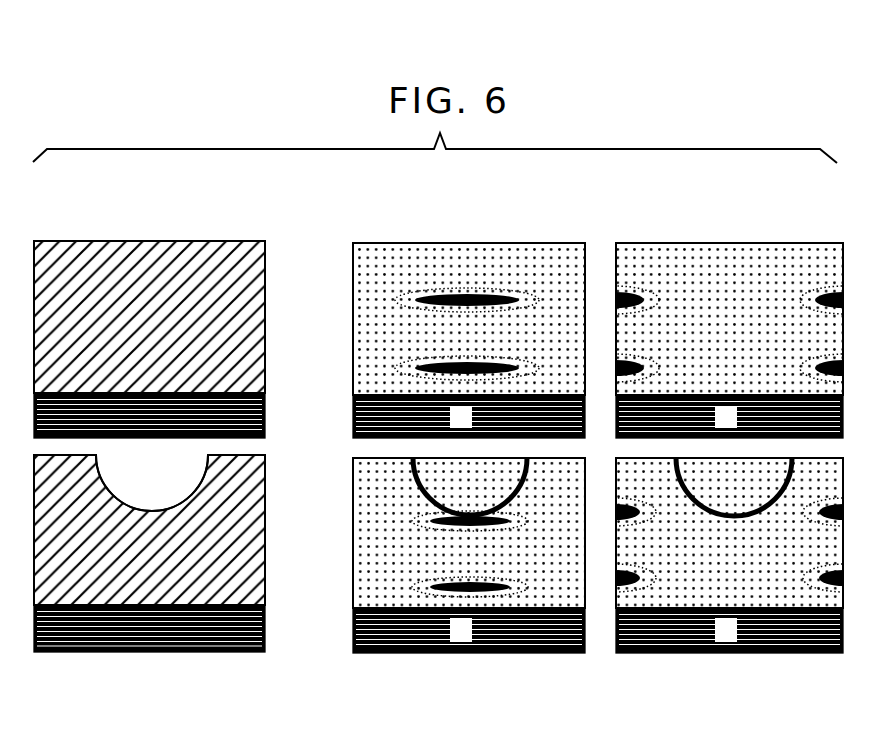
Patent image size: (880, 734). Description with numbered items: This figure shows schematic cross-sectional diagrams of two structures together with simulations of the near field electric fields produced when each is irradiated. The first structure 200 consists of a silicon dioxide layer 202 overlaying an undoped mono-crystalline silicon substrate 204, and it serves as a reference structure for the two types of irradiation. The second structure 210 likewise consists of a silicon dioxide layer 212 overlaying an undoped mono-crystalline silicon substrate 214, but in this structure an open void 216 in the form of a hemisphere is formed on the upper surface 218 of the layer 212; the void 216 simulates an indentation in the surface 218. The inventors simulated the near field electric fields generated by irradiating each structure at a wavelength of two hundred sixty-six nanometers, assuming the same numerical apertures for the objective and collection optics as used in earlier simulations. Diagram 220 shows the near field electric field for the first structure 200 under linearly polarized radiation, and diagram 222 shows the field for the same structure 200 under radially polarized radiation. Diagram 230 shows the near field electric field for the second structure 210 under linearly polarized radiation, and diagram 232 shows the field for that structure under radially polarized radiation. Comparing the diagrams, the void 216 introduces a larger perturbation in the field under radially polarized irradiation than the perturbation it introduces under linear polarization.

The first structure 200 is at (182, 318).
The silicon dioxide layer 202 is at (198, 241).
The undoped mono-crystalline silicon substrate 204 is at (265, 415).
The second structure 210 is at (182, 569).
The silicon dioxide layer 212 is at (265, 555).
The undoped mono-crystalline silicon substrate 214 is at (265, 628).
The open void 216 is at (122, 494).
The upper surface 218 is at (220, 455).
The diagram 220 is at (467, 243).
The diagram 222 is at (685, 243).
The diagram 230 is at (475, 653).
The diagram 232 is at (688, 653).